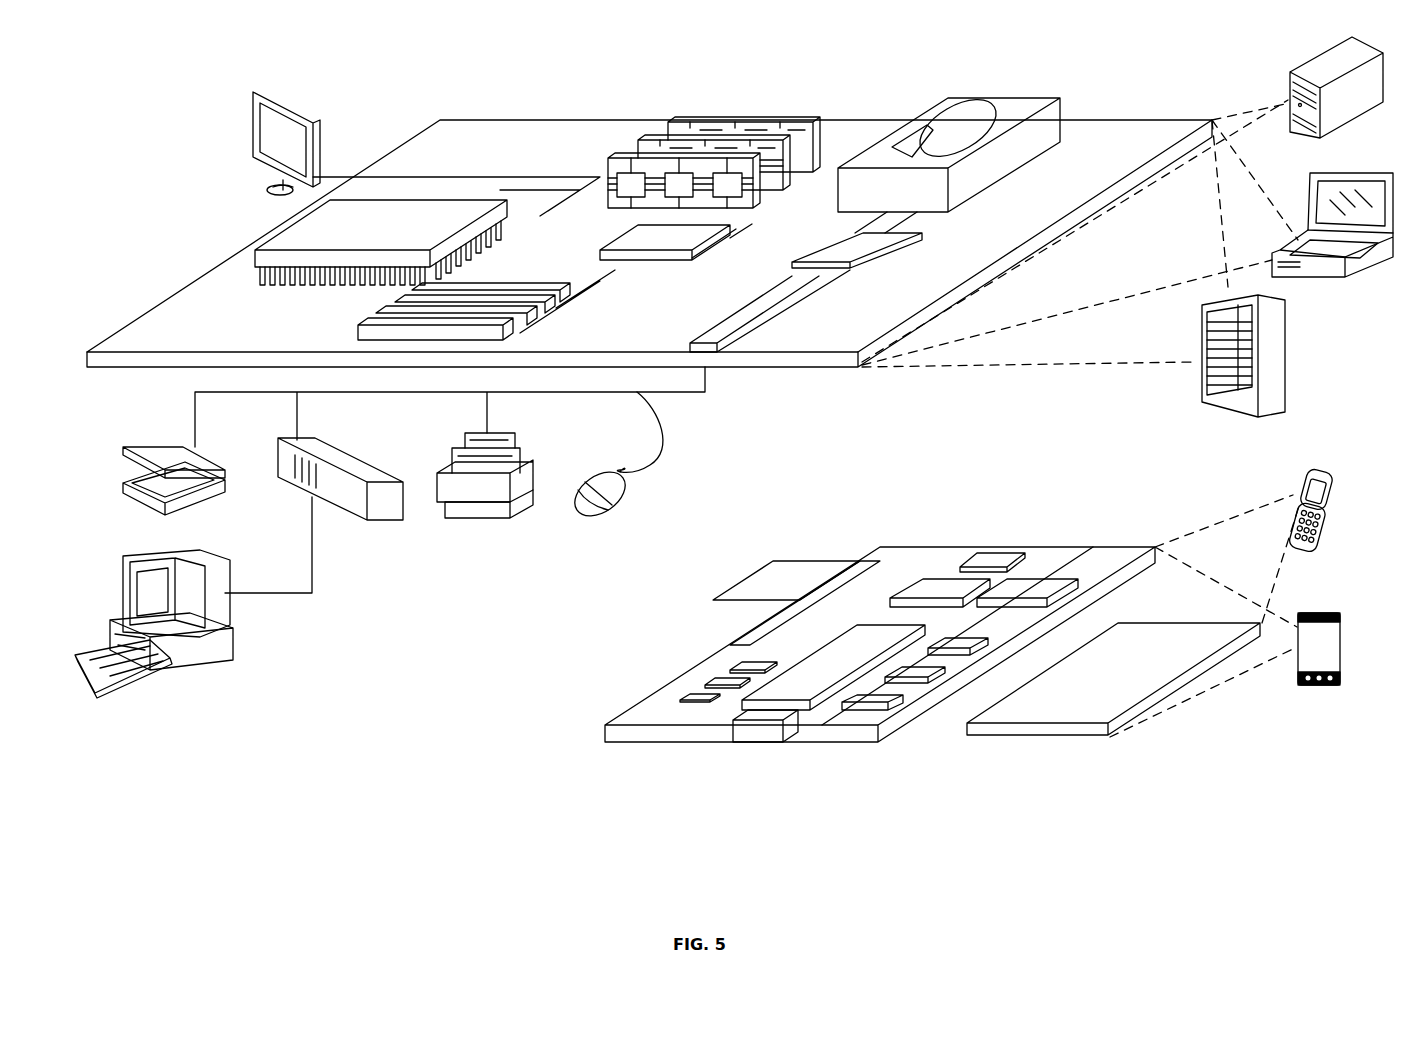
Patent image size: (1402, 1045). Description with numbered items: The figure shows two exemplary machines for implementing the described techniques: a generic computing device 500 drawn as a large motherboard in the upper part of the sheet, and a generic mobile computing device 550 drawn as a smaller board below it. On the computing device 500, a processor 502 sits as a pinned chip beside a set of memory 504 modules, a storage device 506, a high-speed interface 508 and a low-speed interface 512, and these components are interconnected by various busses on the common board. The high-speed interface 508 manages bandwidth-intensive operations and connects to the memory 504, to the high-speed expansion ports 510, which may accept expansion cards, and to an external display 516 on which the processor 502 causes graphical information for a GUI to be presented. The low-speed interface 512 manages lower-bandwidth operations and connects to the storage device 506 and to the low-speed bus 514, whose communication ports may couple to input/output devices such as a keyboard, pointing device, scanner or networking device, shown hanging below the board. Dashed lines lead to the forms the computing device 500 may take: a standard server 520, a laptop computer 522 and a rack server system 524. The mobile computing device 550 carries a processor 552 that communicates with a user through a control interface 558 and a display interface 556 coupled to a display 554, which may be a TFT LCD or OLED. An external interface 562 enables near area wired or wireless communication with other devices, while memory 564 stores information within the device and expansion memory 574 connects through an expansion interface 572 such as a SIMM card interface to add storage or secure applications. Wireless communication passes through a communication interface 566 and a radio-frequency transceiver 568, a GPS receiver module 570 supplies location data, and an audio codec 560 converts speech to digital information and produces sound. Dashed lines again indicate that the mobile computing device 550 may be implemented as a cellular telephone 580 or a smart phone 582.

The computing device 500 is at (392, 66).
The processor 502 is at (285, 235).
The memory 504 is at (750, 115).
The storage device 506 is at (992, 98).
The high-speed interface 508 is at (680, 237).
The high-speed expansion ports 510 is at (385, 310).
The low-speed interface 512 is at (830, 243).
The low-speed bus 514 is at (710, 338).
The display 516 is at (258, 92).
The standard server 520 is at (1310, 65).
The laptop computer 522 is at (1370, 171).
The rack server system 524 is at (1288, 356).
The mobile computing device 550 is at (550, 756).
The processor 552 is at (803, 680).
The display 554 is at (1155, 635).
The display interface 556 is at (892, 700).
The control interface 558 is at (928, 672).
The audio codec 560 is at (962, 640).
The external interface 562 is at (760, 742).
The memory 564 is at (718, 680).
The communication interface 566 is at (940, 595).
The transceiver 568 is at (1037, 590).
The GPS receiver module 570 is at (997, 560).
The expansion interface 572 is at (858, 560).
The expansion memory 574 is at (773, 560).
The cellular telephone 580 is at (1304, 468).
The smart phone 582 is at (1320, 612).